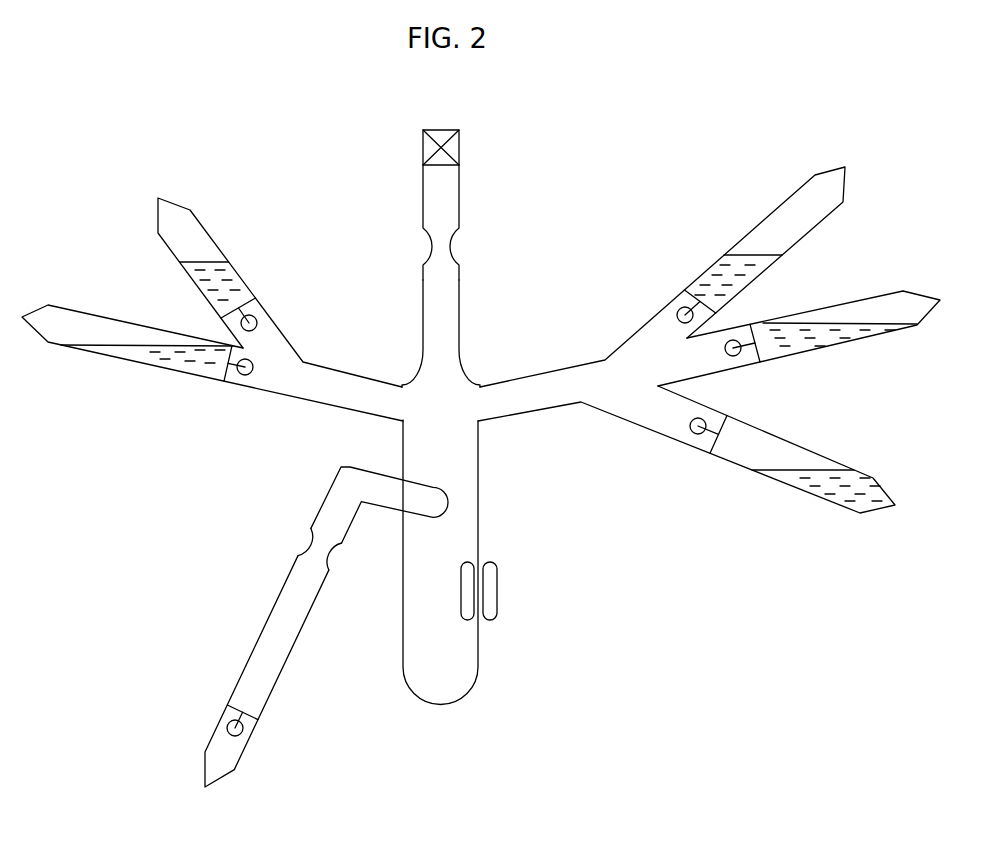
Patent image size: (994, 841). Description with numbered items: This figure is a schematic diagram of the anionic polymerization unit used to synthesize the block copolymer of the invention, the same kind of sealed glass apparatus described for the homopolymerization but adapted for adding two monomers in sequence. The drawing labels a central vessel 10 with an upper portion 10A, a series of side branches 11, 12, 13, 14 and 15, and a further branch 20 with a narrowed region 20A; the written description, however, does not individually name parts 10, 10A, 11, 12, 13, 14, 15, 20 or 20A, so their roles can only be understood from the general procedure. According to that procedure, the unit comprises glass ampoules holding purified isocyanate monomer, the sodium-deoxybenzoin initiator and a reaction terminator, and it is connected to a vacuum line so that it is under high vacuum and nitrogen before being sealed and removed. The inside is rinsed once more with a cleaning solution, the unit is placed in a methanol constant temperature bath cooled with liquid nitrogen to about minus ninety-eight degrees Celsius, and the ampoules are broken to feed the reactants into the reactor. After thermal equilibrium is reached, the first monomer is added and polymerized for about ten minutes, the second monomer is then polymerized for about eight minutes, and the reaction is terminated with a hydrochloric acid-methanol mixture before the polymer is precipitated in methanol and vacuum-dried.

The main body / reaction vessel 10 is at (449, 492).
The inlet neck of main body 10A is at (409, 205).
The first reagent arm 11 is at (280, 292).
The second reagent arm 12 is at (212, 363).
The third reagent arm 13 is at (662, 277).
The fourth reagent arm 14 is at (799, 340).
The fifth reagent arm 15 is at (686, 450).
The sample arm 20 is at (321, 627).
The neck of sample arm 20A is at (292, 549).